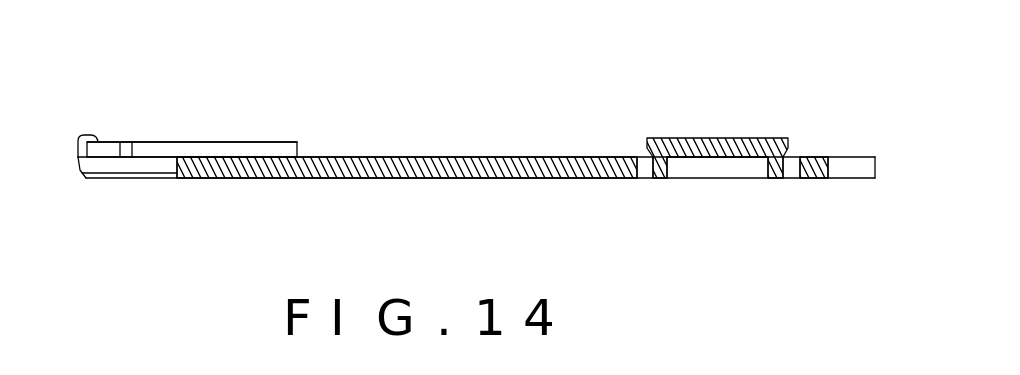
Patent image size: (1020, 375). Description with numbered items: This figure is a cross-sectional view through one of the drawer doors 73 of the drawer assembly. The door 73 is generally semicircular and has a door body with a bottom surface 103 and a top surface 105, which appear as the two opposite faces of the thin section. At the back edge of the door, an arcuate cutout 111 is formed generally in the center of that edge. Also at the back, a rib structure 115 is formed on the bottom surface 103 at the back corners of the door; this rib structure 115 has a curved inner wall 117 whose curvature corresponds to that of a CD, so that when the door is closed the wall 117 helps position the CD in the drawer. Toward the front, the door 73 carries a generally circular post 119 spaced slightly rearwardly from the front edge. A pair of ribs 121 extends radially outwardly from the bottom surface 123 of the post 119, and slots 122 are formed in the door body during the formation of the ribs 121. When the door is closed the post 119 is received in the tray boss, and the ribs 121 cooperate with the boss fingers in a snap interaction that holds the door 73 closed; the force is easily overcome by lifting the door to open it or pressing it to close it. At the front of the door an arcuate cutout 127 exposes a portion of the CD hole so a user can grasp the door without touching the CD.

The drawer door 73 is at (493, 126).
The bottom surface 103 is at (408, 158).
The top surface 105 is at (338, 177).
The arcuate cutout 111 is at (155, 165).
The rib structure 115 is at (180, 128).
The curved inner wall 117 is at (210, 148).
The post 119 is at (749, 129).
The ribs 121 is at (647, 140).
The slots 122 is at (642, 165).
The bottom surface of the post 123 is at (707, 138).
The arcuate cutout 127 is at (855, 167).